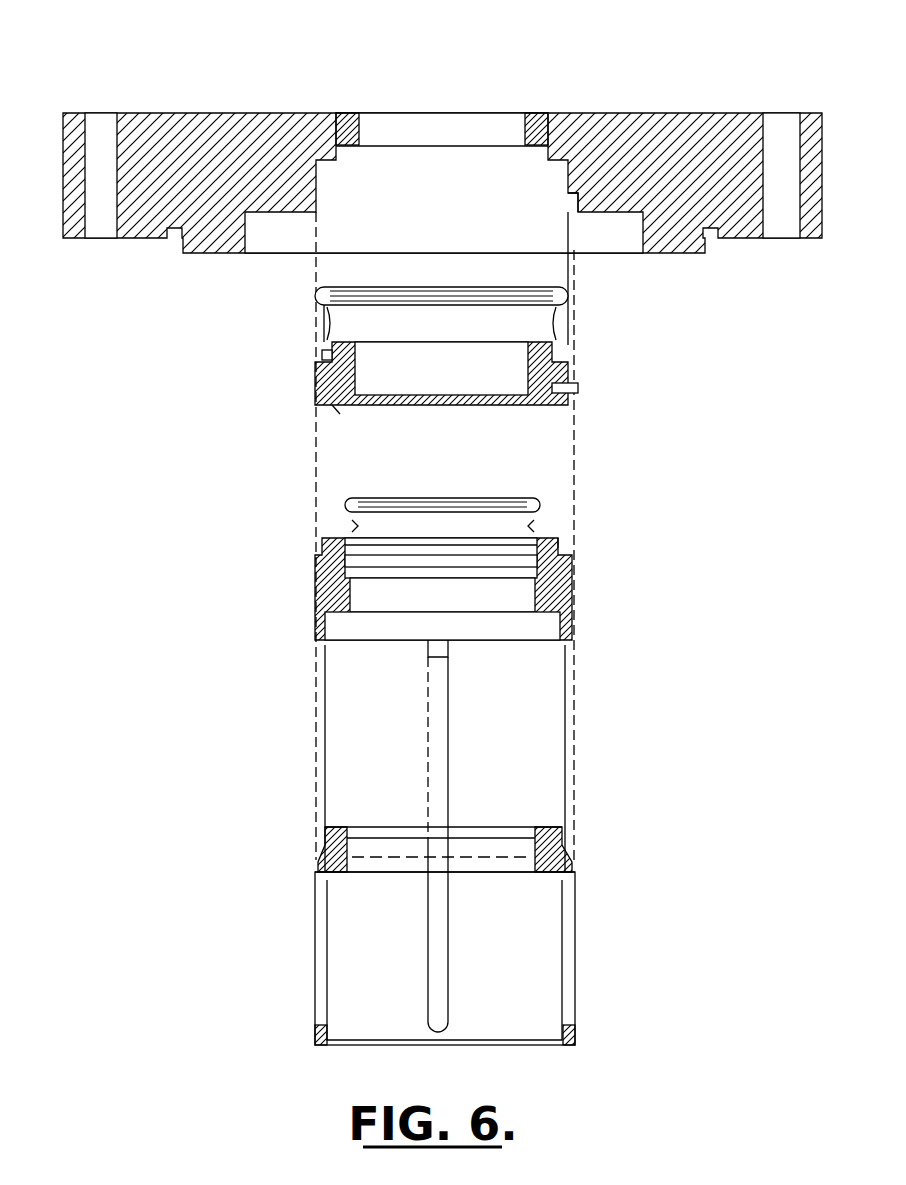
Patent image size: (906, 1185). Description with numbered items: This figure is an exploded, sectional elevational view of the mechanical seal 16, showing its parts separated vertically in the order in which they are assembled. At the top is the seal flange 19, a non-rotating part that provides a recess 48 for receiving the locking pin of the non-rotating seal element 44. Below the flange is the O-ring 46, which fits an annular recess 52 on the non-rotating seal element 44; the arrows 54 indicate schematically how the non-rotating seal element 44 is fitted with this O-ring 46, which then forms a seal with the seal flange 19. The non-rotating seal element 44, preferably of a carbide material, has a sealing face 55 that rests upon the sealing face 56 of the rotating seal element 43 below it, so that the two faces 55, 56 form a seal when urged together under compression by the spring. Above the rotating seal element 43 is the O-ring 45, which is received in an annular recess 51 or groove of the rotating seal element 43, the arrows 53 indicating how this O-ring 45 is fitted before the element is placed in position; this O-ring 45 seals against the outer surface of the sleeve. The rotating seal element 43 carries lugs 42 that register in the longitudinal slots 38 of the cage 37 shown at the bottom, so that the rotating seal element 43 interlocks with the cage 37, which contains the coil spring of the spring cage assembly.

The mechanical seal 16 is at (442, 131).
The seal flange 19 is at (171, 112).
The recess 48 is at (560, 203).
The O-ring 46 is at (488, 290).
The arrows 54 is at (335, 319).
The annular recess 52 is at (327, 357).
The non-rotating seal element 44 is at (315, 380).
The sealing face 55 is at (334, 414).
The O-ring 45 is at (490, 500).
The arrows 53 is at (345, 527).
The annular recess 51 is at (485, 580).
The sealing face 56 is at (560, 540).
The rotating seal element 43 is at (316, 592).
The lugs 42 is at (428, 650).
The longitudinal slots 38 is at (441, 858).
The cage 37 is at (315, 866).